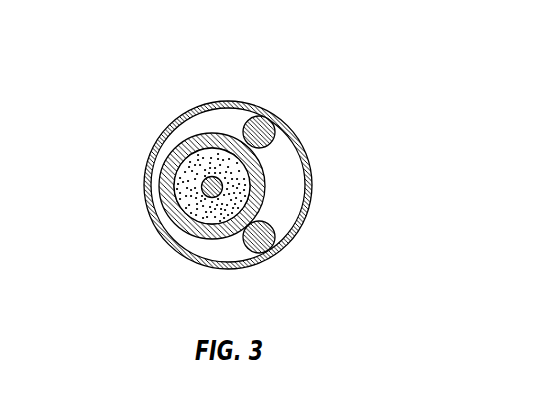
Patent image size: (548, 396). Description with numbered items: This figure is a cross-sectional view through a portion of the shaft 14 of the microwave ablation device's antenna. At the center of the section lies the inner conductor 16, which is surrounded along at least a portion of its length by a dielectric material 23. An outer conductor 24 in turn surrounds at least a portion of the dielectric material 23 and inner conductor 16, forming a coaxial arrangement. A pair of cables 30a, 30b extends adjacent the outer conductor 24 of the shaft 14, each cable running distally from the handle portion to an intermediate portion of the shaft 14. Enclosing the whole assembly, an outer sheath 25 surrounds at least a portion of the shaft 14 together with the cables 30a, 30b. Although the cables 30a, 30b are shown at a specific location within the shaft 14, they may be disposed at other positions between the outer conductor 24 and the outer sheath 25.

The shaft 14 is at (256, 62).
The inner conductor 16 is at (202, 191).
The dielectric material 23 is at (176, 171).
The outer conductor 24 is at (188, 231).
The outer sheath 25 is at (207, 103).
The cable 30a is at (271, 246).
The cable 30b is at (271, 123).